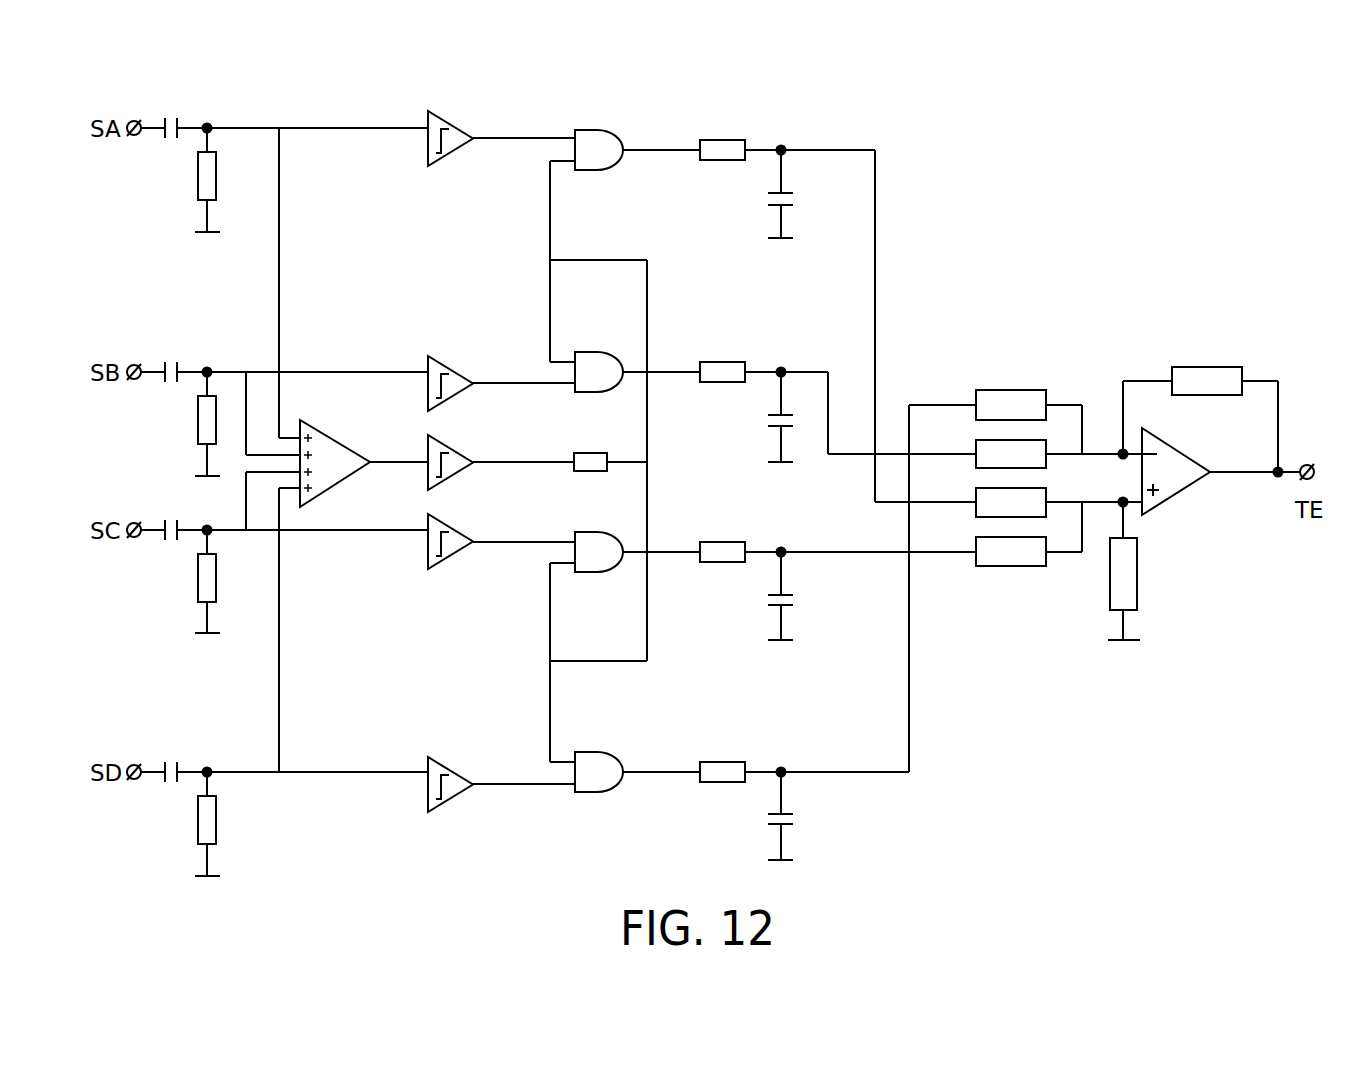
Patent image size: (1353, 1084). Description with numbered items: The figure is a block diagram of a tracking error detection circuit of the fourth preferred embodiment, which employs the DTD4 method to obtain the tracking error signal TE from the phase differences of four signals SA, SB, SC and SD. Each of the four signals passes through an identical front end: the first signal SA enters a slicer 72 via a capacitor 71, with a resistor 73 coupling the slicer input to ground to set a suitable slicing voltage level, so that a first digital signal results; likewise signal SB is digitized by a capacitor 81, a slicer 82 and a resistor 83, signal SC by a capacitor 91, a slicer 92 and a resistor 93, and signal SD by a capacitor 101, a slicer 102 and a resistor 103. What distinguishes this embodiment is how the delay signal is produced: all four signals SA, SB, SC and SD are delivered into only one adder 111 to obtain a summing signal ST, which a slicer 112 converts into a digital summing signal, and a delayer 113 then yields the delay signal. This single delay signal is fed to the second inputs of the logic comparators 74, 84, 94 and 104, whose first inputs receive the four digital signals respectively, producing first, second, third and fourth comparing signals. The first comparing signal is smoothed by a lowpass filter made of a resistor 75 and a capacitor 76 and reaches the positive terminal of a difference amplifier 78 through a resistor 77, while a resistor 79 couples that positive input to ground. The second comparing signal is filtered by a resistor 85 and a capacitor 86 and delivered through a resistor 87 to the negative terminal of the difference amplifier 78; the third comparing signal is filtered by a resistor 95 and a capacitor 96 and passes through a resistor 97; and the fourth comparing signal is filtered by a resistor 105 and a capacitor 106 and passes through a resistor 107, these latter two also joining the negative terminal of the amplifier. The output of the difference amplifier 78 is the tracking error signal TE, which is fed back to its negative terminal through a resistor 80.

The capacitor 71 is at (172, 115).
The slicer 72 is at (452, 116).
The resistor 73 is at (198, 178).
The logic comparator (AND) 74 is at (598, 130).
The resistor 75 is at (728, 140).
The capacitor 76 is at (796, 199).
The resistor 77 is at (1048, 461).
The difference amplifier 78 is at (1191, 458).
The resistor 79 is at (1138, 574).
The resistor 80 is at (1205, 367).
The capacitor 81 is at (172, 360).
The slicer 82 is at (443, 360).
The resistor 83 is at (198, 422).
The logic comparator 84 is at (594, 352).
The resistor 85 is at (728, 362).
The capacitor 86 is at (766, 420).
The resistor 87 is at (975, 495).
The capacitor 91 is at (172, 518).
The slicer 92 is at (454, 528).
The resistor 93 is at (198, 578).
The logic comparator (AND) 94 is at (594, 532).
The resistor 95 is at (724, 542).
The capacitor 96 is at (796, 600).
The resistor 97 is at (999, 567).
The capacitor 101 is at (172, 762).
The slicer 102 is at (450, 766).
The resistor 103 is at (198, 822).
The logic comparator 104 is at (596, 752).
The resistor 105 is at (724, 762).
The capacitor 106 is at (796, 821).
The resistor 107 is at (999, 390).
The adder 111 is at (324, 433).
The slicer 112 is at (457, 448).
The delayer 113 is at (594, 453).